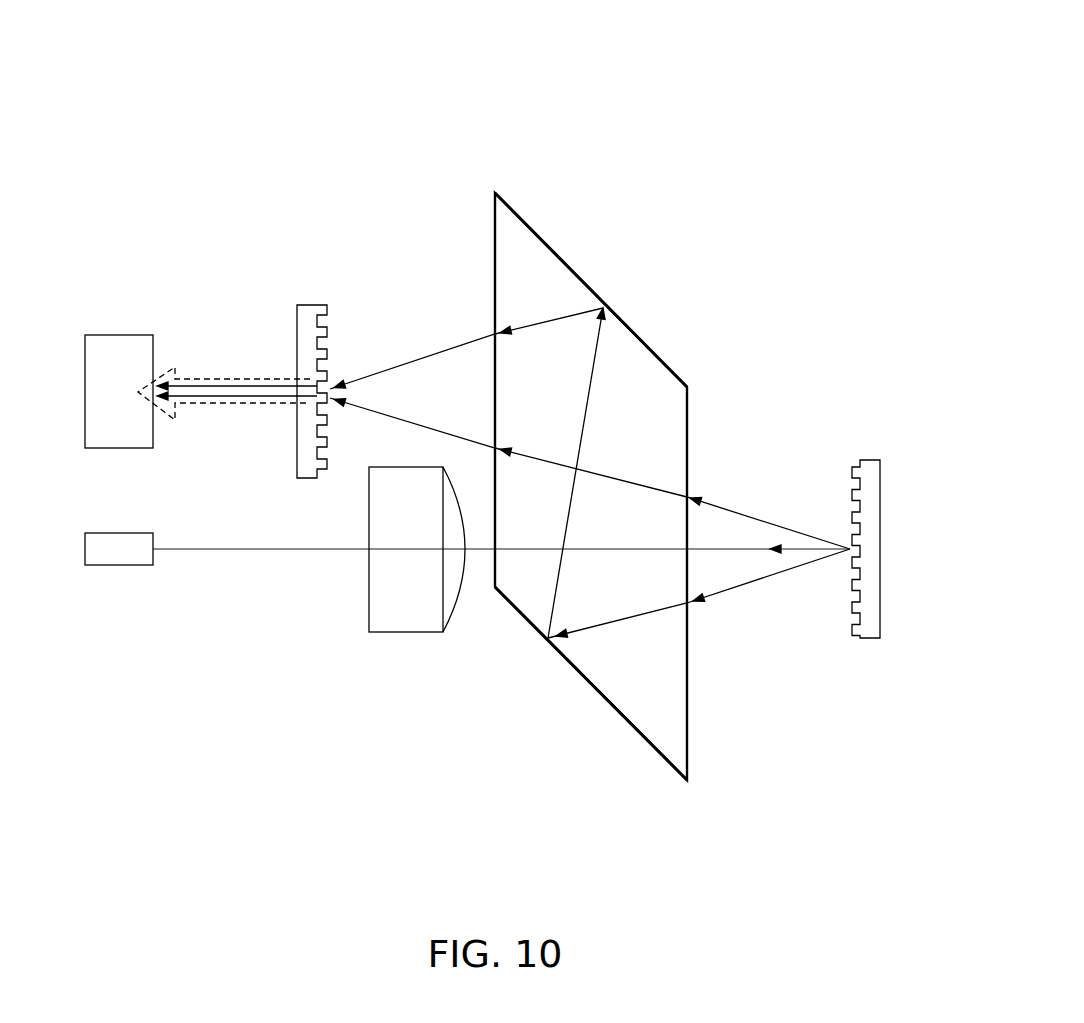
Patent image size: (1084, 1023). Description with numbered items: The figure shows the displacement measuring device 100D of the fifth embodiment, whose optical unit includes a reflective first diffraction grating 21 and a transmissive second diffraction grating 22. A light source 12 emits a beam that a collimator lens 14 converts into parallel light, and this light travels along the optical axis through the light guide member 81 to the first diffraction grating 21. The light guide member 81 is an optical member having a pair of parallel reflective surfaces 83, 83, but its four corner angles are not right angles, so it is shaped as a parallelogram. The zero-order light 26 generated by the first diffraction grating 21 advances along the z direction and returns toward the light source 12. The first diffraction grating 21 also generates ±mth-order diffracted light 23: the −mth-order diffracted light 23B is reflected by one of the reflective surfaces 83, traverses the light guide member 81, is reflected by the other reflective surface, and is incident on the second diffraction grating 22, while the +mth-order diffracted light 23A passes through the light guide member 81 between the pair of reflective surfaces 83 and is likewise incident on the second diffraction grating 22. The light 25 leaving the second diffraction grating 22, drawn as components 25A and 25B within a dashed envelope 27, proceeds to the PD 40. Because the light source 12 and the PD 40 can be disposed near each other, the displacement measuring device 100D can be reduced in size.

The displacement measuring device 100D is at (508, 105).
The light source 12 is at (120, 557).
The collimator lens 14 is at (405, 622).
The first diffraction grating 21 is at (868, 462).
The second diffraction grating 22 is at (308, 308).
The ±mth-order diffracted light 23 is at (591, 473).
The +mth-order diffracted light 23A is at (730, 507).
The −mth-order diffracted light 23B is at (747, 583).
The light toward detector 25 is at (227, 313).
The first light component 25A is at (138, 278).
The second light component 25B is at (197, 383).
The zero-order light 26 is at (803, 552).
The light beam envelope 27 is at (227, 405).
The PD 40 is at (117, 343).
The light guide member 81 is at (505, 287).
The reflective surfaces 83 is at (547, 248).